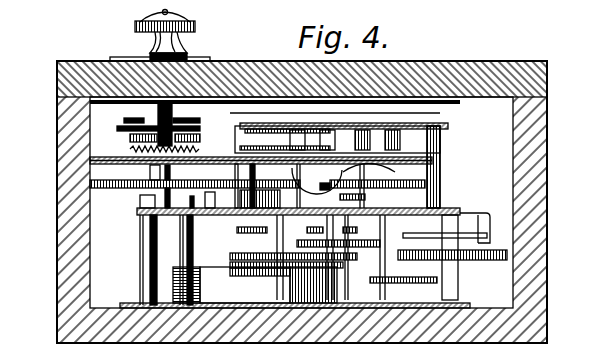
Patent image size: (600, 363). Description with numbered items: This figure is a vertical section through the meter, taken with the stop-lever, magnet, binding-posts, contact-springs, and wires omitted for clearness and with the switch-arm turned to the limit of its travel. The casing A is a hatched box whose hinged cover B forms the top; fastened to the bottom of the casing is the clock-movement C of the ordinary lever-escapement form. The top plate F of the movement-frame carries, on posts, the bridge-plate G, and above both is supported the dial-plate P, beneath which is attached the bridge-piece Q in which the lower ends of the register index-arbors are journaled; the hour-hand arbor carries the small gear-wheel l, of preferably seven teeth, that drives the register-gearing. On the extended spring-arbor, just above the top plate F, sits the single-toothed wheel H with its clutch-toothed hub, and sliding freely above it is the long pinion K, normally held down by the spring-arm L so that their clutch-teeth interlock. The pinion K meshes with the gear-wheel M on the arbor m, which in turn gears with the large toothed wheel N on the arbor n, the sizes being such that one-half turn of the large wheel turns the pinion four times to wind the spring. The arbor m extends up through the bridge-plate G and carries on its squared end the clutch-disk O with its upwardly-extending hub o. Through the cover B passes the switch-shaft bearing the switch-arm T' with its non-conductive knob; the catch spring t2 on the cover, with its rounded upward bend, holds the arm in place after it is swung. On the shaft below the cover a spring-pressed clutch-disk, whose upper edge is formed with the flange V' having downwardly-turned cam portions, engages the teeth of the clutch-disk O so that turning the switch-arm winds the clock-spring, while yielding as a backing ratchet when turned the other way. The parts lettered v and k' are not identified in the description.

The casing A is at (299, 202).
The hinged cover B is at (268, 66).
The switch-arm T' is at (171, 35).
The catch spring t2 is at (146, 57).
The flange V' is at (150, 125).
The ratchet v is at (185, 130).
The hub o is at (204, 149).
The clutch-disk O is at (128, 158).
The bridge-plate G is at (145, 172).
The gear-wheel M is at (231, 186).
The large toothed wheel N is at (257, 193).
The arbor n is at (163, 198).
The arbor m is at (232, 200).
The bridge-piece Q is at (452, 148).
The dial-plate P is at (447, 126).
The pinion K is at (317, 186).
The spring-arm L is at (370, 186).
The small gear-wheel l is at (368, 199).
The single-toothed wheel H is at (260, 201).
The top plate F is at (174, 216).
The gear k' is at (288, 226).
The clock-movement C is at (324, 269).